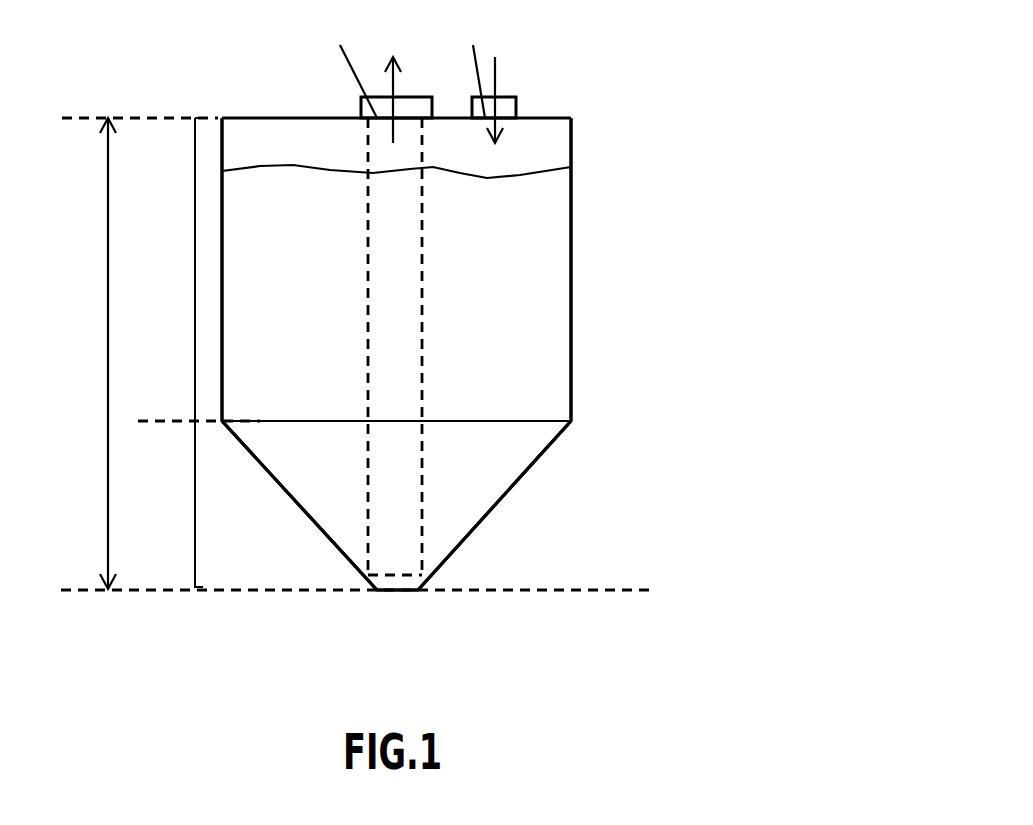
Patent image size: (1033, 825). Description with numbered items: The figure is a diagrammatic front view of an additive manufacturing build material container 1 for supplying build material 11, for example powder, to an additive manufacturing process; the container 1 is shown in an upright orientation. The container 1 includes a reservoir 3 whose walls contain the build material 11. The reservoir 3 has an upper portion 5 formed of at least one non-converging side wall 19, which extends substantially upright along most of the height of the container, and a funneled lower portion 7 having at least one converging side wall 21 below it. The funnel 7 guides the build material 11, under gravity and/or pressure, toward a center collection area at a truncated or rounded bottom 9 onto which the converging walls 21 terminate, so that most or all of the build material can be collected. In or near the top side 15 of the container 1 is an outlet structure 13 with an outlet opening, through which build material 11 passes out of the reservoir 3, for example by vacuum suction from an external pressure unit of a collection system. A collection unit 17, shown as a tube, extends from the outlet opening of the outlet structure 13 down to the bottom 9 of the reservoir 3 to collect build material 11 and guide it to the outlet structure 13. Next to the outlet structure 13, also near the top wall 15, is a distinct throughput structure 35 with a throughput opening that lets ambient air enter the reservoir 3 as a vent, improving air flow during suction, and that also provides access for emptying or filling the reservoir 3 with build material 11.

The additive manufacturing build material container 1 is at (600, 126).
The reservoir 3 is at (571, 323).
The upper portion 5 is at (365, 269).
The funneled lower portion 7 is at (195, 503).
The bottom 9 is at (412, 591).
The build material 11 is at (329, 322).
The outlet structure 13 is at (410, 91).
The top side 15 is at (283, 118).
The collection unit 17 is at (422, 257).
The non-converging side wall 19 is at (222, 147).
The converging side wall 21 is at (327, 537).
The throughput structure 35 is at (525, 100).